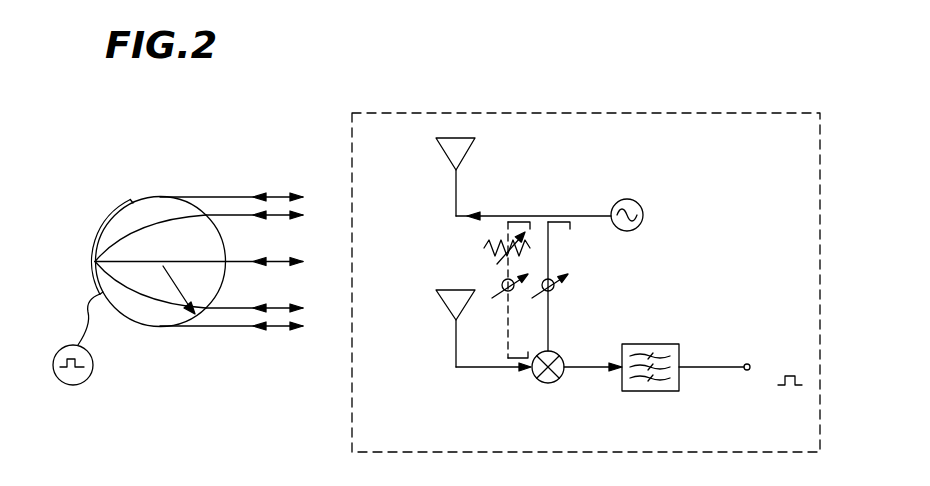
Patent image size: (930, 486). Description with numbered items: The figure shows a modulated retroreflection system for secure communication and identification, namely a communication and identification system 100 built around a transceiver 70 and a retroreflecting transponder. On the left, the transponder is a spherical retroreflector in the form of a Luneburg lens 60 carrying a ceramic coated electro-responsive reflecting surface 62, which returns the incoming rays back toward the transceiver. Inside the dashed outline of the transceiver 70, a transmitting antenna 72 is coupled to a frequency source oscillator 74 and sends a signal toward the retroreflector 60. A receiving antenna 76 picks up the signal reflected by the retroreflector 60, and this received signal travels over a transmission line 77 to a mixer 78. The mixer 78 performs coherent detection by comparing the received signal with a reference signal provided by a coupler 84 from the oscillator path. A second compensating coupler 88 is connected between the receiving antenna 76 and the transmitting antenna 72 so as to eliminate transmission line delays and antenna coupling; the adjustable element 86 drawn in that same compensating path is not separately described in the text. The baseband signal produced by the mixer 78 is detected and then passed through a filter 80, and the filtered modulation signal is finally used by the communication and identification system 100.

The communication and identification system 100 is at (307, 66).
The Luneburg lens 60 is at (163, 196).
The electro-responsive reflecting surface 62 is at (113, 212).
The transceiver 70 is at (575, 113).
The transmitting antenna 72 is at (468, 155).
The frequency source oscillator 74 is at (633, 198).
The receiving antenna 76 is at (436, 289).
The transmission line 77 is at (471, 369).
The mixer 78 is at (535, 378).
The filter 80 is at (680, 349).
The coupler 84 is at (553, 276).
The variable attenuator 86 is at (490, 248).
The second compensating coupler 88 is at (500, 281).